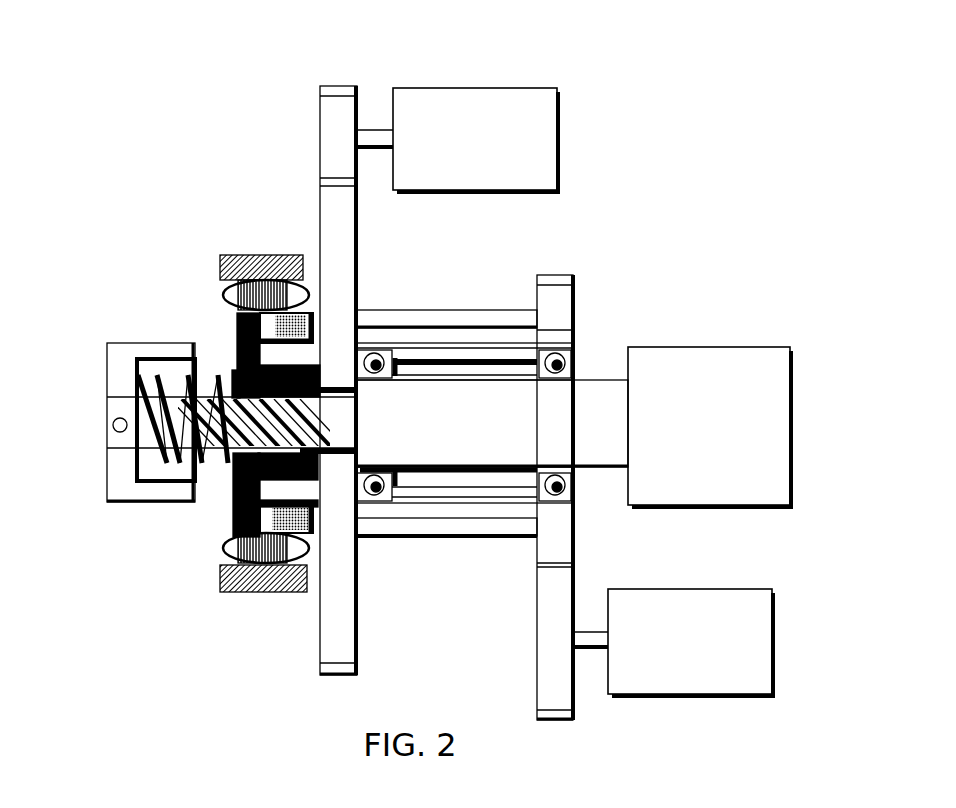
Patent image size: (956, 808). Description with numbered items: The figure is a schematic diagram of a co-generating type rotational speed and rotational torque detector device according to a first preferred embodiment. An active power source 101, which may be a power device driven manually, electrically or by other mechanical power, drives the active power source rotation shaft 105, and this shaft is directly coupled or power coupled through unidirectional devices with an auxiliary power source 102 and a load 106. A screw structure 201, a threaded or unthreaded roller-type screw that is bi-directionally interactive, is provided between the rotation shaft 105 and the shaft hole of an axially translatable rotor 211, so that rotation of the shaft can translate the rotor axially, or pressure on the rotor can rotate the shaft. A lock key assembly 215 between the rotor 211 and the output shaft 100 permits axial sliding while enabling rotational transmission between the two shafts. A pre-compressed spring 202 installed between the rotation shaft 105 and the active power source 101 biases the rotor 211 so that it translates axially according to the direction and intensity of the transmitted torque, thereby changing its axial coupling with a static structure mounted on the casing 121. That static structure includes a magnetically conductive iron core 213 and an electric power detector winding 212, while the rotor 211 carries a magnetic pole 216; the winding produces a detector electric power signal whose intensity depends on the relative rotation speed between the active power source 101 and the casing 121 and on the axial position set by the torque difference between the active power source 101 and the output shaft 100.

The output shaft 100 is at (455, 316).
The active power source 101 is at (793, 430).
The auxiliary power source 102 is at (562, 152).
The active power source rotation shaft 105 is at (548, 410).
The load 106 is at (775, 658).
The casing 121 is at (276, 257).
The screw structure 201 is at (222, 453).
The pre-compressed spring 202 is at (135, 413).
The axially translatable rotor 211 is at (237, 336).
The electric power detector winding 212 is at (226, 296).
The magnetically conductive iron core 213 is at (243, 287).
The lock key assembly 215 is at (312, 512).
The magnetic pole 216 is at (307, 320).